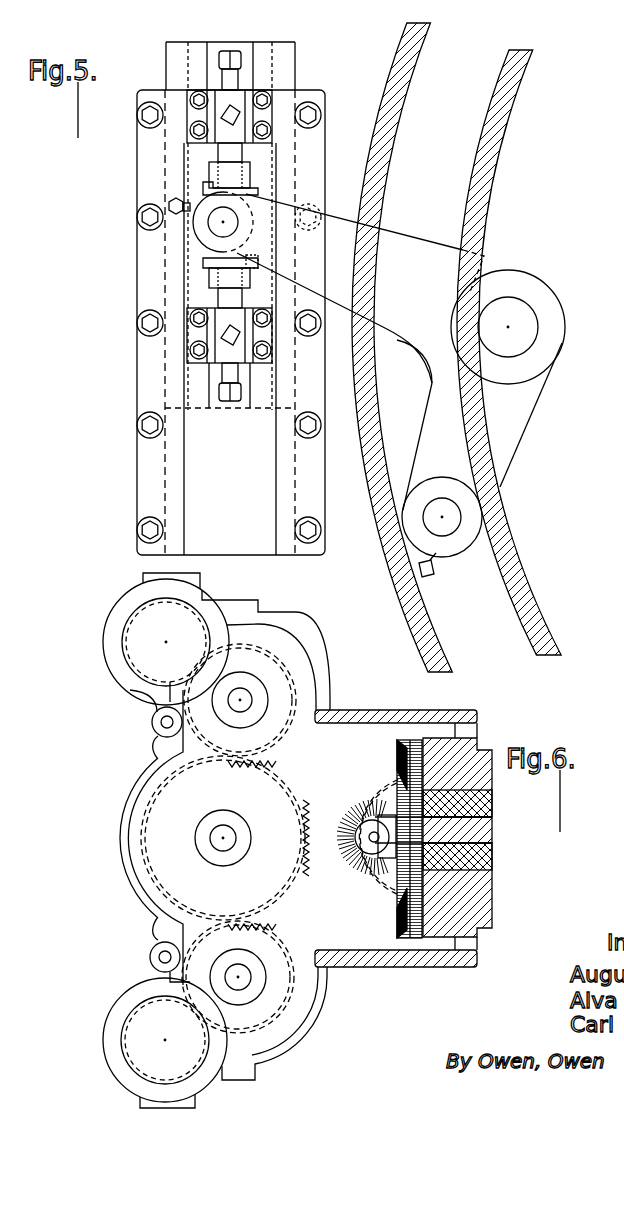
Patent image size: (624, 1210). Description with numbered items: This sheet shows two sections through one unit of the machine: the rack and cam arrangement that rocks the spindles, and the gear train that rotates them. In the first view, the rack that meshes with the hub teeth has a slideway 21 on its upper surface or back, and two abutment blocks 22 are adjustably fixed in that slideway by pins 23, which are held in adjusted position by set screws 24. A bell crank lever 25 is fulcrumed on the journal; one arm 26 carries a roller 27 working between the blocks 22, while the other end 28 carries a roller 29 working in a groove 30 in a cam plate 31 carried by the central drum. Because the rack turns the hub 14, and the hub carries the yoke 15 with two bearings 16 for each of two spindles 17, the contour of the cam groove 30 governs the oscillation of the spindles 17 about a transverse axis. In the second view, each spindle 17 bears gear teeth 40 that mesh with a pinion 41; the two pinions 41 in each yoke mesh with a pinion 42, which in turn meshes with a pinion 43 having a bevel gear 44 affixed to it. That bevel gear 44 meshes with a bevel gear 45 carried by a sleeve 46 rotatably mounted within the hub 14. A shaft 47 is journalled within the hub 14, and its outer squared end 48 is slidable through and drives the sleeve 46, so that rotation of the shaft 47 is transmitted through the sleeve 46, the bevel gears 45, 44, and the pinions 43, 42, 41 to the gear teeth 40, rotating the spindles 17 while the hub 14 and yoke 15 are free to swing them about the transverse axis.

In FIG. 6, the hub 14 is at (485, 758).
In FIG. 6, the yoke 15 is at (365, 714).
In FIG. 6, the bearings 16 is at (195, 602).
In FIG. 6, the spindles 17 is at (137, 650).
In FIG. 5, the slideway 21 is at (183, 315).
In FIG. 5, the abutment blocks 22 is at (205, 190).
In FIG. 5, the pins 23 is at (228, 150).
In FIG. 5, the set screws 24 is at (224, 118).
In FIG. 5, the bell crank lever 25 is at (487, 272).
In FIG. 5, the arm 26 is at (345, 232).
In FIG. 5, the roller 27 is at (242, 203).
In FIG. 5, the other end 28 is at (508, 435).
In FIG. 5, the roller 29 is at (462, 540).
In FIG. 5, the groove 30 is at (440, 482).
In FIG. 5, the cam plate 31 is at (515, 563).
In FIG. 6, the gear teeth 40 is at (143, 677).
In FIG. 6, the pinion 41 is at (253, 757).
In FIG. 6, the pinion 42 is at (252, 763).
In FIG. 6, the pinion 43 is at (330, 800).
In FIG. 6, the bevel gear 44 is at (380, 813).
In FIG. 6, the bevel gear 45 is at (400, 763).
In FIG. 6, the sleeve 46 is at (440, 803).
In FIG. 6, the shaft 47 is at (482, 837).
In FIG. 6, the outer squared end 48 is at (392, 857).